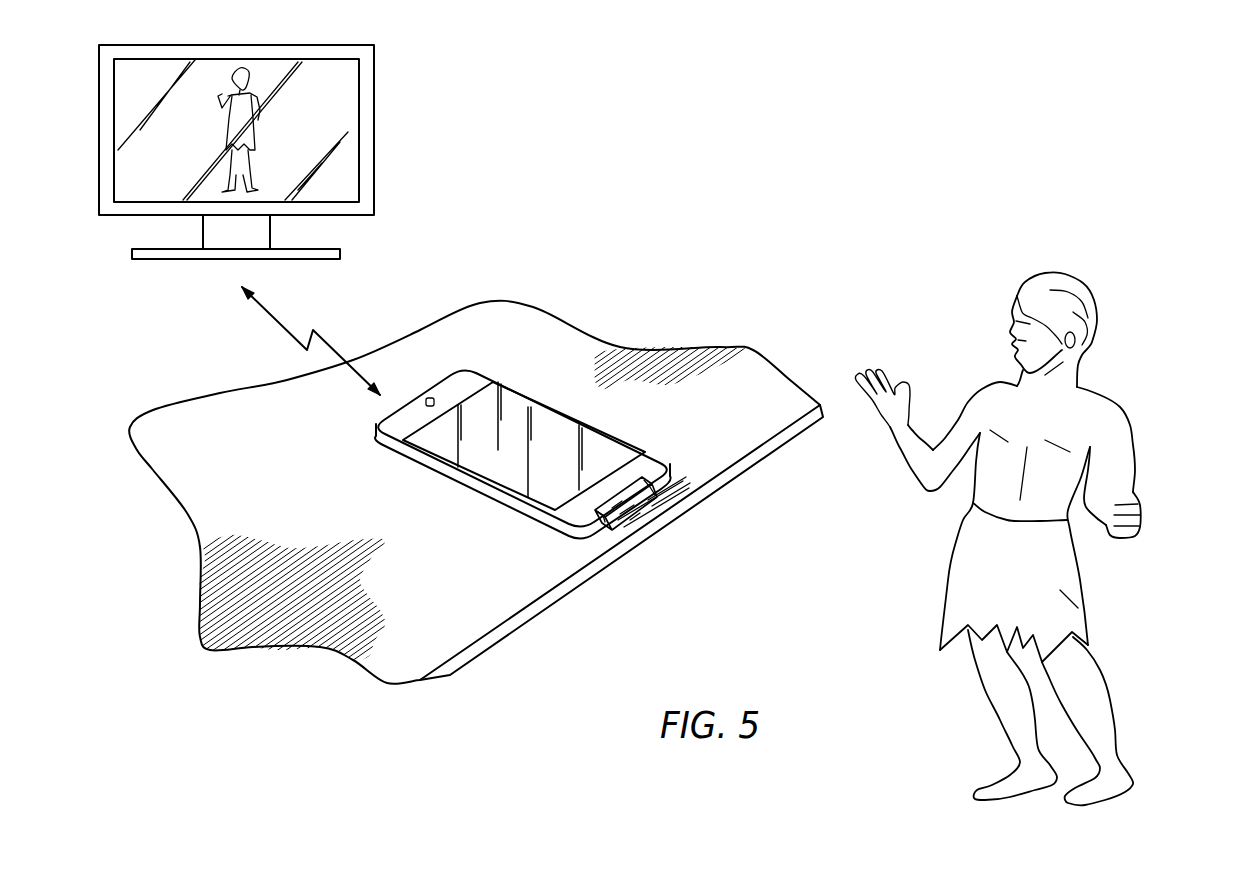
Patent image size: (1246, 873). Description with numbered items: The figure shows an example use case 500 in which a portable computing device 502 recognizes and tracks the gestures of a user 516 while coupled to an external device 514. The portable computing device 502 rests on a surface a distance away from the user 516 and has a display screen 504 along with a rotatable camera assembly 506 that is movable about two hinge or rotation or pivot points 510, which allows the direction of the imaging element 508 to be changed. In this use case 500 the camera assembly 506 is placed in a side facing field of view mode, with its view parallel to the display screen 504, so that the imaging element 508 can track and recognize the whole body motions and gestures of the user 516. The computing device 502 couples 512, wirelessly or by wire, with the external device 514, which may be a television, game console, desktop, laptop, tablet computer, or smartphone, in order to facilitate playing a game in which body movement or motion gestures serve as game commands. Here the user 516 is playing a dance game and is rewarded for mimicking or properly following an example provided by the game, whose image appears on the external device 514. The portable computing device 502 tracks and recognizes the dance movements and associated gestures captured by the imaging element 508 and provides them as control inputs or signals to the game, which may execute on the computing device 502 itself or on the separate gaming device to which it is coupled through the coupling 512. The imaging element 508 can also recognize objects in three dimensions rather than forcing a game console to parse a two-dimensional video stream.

The use case 500 is at (950, 185).
The portable computing device 502 is at (430, 463).
The display screen 504 is at (530, 407).
The rotatable camera assembly 506 is at (631, 528).
The imaging element 508 is at (645, 523).
The hinge or rotation or pivot points 510 is at (605, 522).
The wireless (or wired) coupling 512 is at (323, 340).
The external device 514 is at (373, 115).
The user 516 is at (1137, 382).